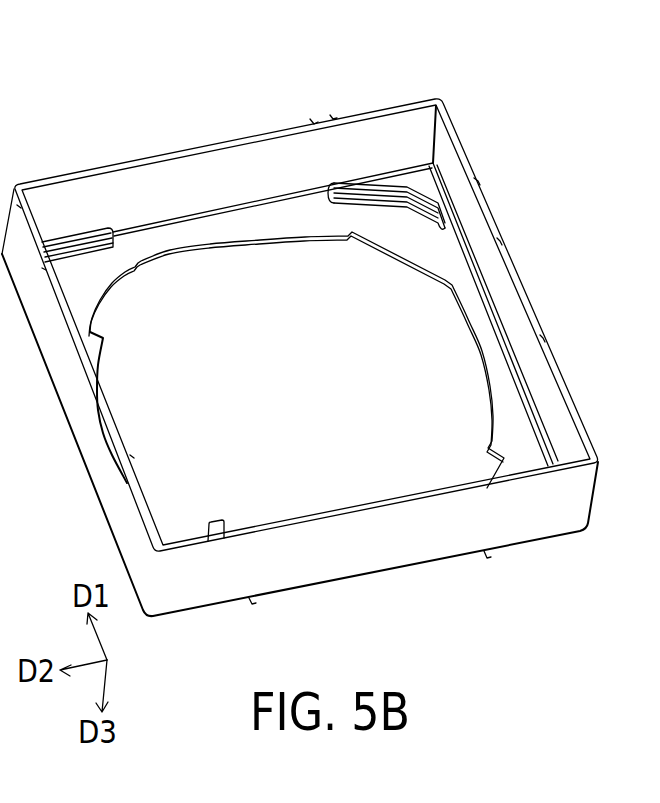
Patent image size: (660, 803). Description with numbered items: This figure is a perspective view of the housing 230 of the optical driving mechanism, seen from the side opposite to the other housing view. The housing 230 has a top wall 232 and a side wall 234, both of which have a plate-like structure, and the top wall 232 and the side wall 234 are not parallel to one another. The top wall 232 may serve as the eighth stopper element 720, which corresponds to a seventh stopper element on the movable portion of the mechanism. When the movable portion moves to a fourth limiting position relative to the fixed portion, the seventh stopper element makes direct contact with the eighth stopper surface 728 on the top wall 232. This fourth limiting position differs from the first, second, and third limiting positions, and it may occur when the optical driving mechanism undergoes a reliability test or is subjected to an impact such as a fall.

The housing 230 is at (189, 127).
The eighth stopper element 720 is at (297, 222).
The eighth stopper surface 728 is at (352, 228).
The side wall 234 is at (468, 217).
The top wall 232 is at (500, 440).